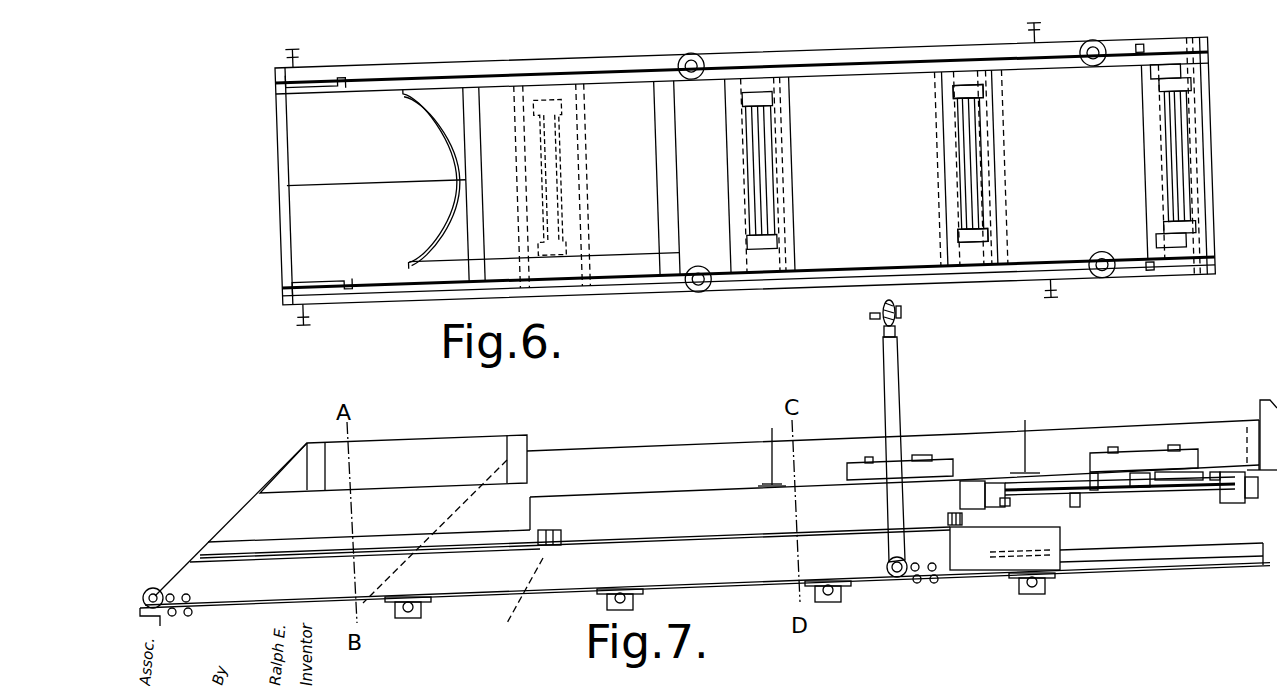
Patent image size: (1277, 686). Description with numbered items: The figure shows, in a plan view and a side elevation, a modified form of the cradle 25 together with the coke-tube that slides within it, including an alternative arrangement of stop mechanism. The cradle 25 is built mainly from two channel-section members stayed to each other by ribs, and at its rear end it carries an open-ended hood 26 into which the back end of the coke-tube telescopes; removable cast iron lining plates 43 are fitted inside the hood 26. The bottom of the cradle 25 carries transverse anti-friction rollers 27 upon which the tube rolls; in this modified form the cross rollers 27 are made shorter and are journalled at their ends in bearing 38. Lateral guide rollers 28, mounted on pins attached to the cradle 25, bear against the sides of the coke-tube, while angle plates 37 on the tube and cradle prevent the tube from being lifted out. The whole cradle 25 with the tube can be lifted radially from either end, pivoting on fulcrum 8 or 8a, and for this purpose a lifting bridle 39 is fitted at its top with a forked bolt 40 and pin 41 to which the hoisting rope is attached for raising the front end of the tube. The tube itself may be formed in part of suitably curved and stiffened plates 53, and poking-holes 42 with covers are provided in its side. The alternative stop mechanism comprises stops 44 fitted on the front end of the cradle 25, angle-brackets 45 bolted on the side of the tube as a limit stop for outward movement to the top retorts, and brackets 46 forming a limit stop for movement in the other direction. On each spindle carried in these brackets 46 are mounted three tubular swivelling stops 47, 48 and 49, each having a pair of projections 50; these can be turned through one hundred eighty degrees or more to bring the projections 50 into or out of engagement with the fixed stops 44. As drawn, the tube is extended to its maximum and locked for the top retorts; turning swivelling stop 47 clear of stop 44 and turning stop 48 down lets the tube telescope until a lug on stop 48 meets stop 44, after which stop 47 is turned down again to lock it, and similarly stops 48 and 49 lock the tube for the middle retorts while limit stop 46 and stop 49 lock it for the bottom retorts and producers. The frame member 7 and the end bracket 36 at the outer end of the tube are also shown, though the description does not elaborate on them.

In FIG. 7, the frame member 7 is at (516, 605).
In FIG. 6, the fulcrum 8 is at (1028, 34).
In FIG. 7, the fulcrum 8 is at (900, 578).
In FIG. 6, the fulcrum 8a is at (300, 70).
In FIG. 7, the fulcrum 8a is at (154, 588).
In FIG. 7, the cradle 25 is at (703, 565).
In FIG. 6, the hood 26 is at (628, 238).
In FIG. 7, the hood 26 is at (423, 453).
In FIG. 6, the anti-friction rollers 27 is at (962, 207).
In FIG. 7, the anti-friction rollers 27 is at (410, 618).
In FIG. 6, the lateral guide rollers 28 is at (702, 58).
In FIG. 7, the lateral guide rollers 28 is at (561, 538).
In FIG. 7, the end bracket 36 is at (1253, 426).
In FIG. 7, the angle plates 37 is at (1060, 566).
In FIG. 6, the bearing 38 is at (975, 92).
In FIG. 7, the lifting bridle 39 is at (896, 436).
In FIG. 7, the forked bolt 40 is at (898, 320).
In FIG. 7, the pin 41 is at (873, 320).
In FIG. 7, the poking-holes 42 is at (953, 467).
In FIG. 6, the lining plates 43 is at (385, 195).
In FIG. 6, the stops 44 is at (1140, 47).
In FIG. 7, the stops 44 is at (1003, 506).
In FIG. 7, the angle-brackets 45 is at (990, 490).
In FIG. 7, the brackets 46 is at (1250, 487).
In FIG. 7, the swivelling stop 47 is at (1062, 498).
In FIG. 7, the swivelling stop 48 is at (1108, 494).
In FIG. 7, the swivelling stop 49 is at (1190, 490).
In FIG. 7, the projections 50 is at (1130, 480).
In FIG. 7, the plates 53 is at (680, 452).